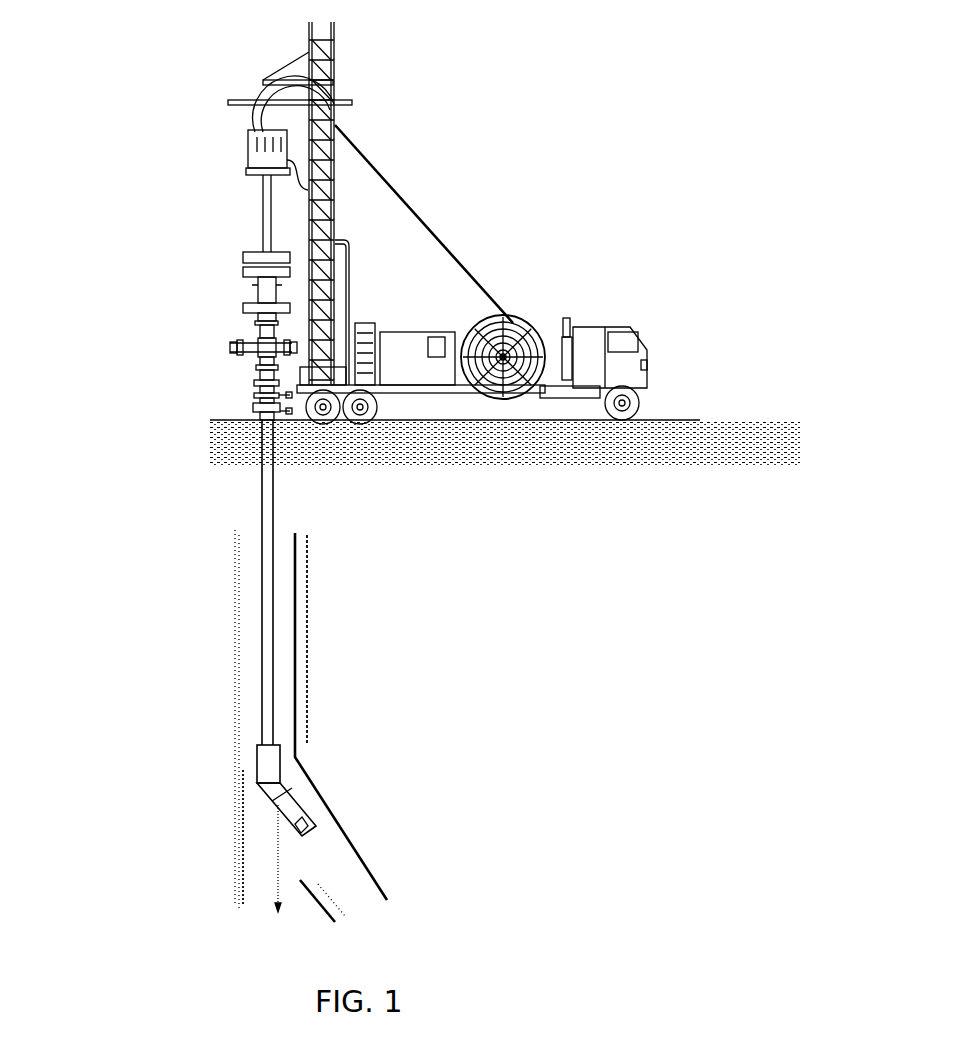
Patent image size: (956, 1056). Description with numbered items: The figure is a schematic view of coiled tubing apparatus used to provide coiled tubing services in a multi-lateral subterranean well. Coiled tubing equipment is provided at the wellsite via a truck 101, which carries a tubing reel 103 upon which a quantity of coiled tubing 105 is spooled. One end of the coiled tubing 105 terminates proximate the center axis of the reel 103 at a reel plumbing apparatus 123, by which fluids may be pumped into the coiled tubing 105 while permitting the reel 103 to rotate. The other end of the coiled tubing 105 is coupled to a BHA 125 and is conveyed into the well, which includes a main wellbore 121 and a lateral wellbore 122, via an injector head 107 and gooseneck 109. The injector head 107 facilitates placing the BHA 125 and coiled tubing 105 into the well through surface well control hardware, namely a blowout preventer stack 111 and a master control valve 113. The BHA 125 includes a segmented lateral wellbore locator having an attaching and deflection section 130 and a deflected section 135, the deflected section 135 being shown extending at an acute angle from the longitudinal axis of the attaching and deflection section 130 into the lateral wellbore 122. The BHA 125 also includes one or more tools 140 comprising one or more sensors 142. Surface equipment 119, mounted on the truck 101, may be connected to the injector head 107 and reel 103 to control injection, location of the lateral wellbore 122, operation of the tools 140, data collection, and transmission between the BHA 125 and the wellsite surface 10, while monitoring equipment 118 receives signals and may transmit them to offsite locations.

The wellsite surface 10 is at (696, 414).
The truck 101 is at (619, 327).
The tubing reel 103 is at (520, 322).
The coiled tubing 105 is at (455, 258).
The injector head 107 is at (249, 162).
The gooseneck 109 is at (262, 102).
The blowout preventer stack 111 is at (236, 283).
The master control valve 113 is at (224, 388).
The monitoring equipment 118 is at (437, 337).
The surface equipment 119 is at (420, 332).
The main wellbore 121 is at (238, 617).
The lateral wellbore 122 is at (382, 882).
The reel plumbing apparatus 123 is at (503, 357).
The BHA 125 is at (352, 738).
The attaching and deflection section 130 is at (257, 760).
The deflected section 135 is at (307, 790).
The tools 140 is at (310, 817).
The sensors 142 is at (310, 830).